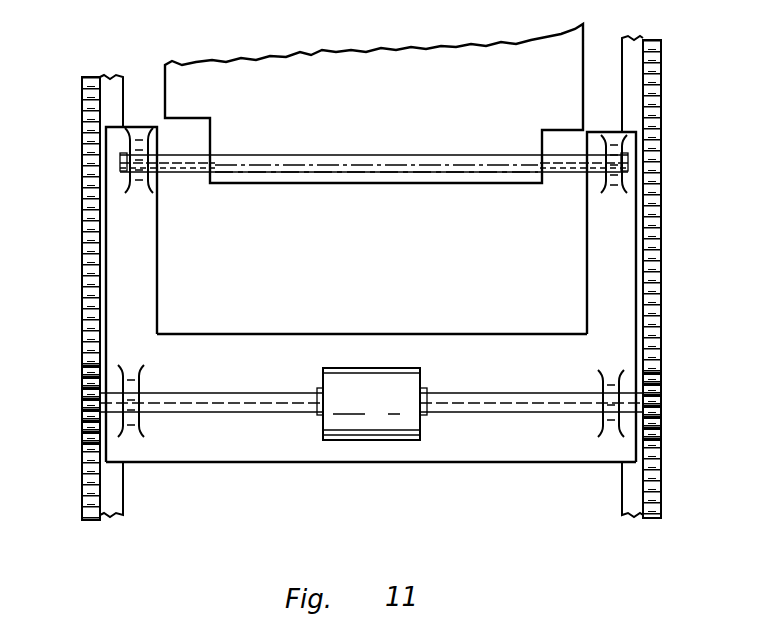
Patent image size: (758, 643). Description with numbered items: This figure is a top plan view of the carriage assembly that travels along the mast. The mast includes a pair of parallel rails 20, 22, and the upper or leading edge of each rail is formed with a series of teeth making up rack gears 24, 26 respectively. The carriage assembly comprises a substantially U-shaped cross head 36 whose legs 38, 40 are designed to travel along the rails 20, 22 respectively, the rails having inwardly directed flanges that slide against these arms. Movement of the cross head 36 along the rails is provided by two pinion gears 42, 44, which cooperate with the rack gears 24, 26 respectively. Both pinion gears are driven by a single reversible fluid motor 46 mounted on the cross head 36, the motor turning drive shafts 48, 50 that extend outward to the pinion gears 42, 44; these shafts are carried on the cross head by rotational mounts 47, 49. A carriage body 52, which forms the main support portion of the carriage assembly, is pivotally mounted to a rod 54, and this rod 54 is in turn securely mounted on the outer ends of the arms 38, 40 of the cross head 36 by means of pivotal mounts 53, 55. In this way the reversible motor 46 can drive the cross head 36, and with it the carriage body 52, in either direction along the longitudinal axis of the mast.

The rail 20 is at (82, 318).
The rail 22 is at (661, 315).
The rack gear 24 is at (88, 258).
The rack gear 26 is at (661, 262).
The cross head 36 is at (268, 463).
The leg 38 is at (157, 256).
The leg 40 is at (587, 258).
The pinion gear 42 is at (82, 392).
The pinion gear 44 is at (661, 397).
The reversible fluid motor 46 is at (375, 369).
The rotational mount 47 is at (140, 385).
The drive shaft 48 is at (215, 393).
The rotational mount 49 is at (604, 392).
The drive shaft 50 is at (450, 394).
The carriage body 52 is at (583, 25).
The pivotal mount 53 is at (130, 188).
The rod 54 is at (183, 174).
The pivotal mount 55 is at (618, 188).